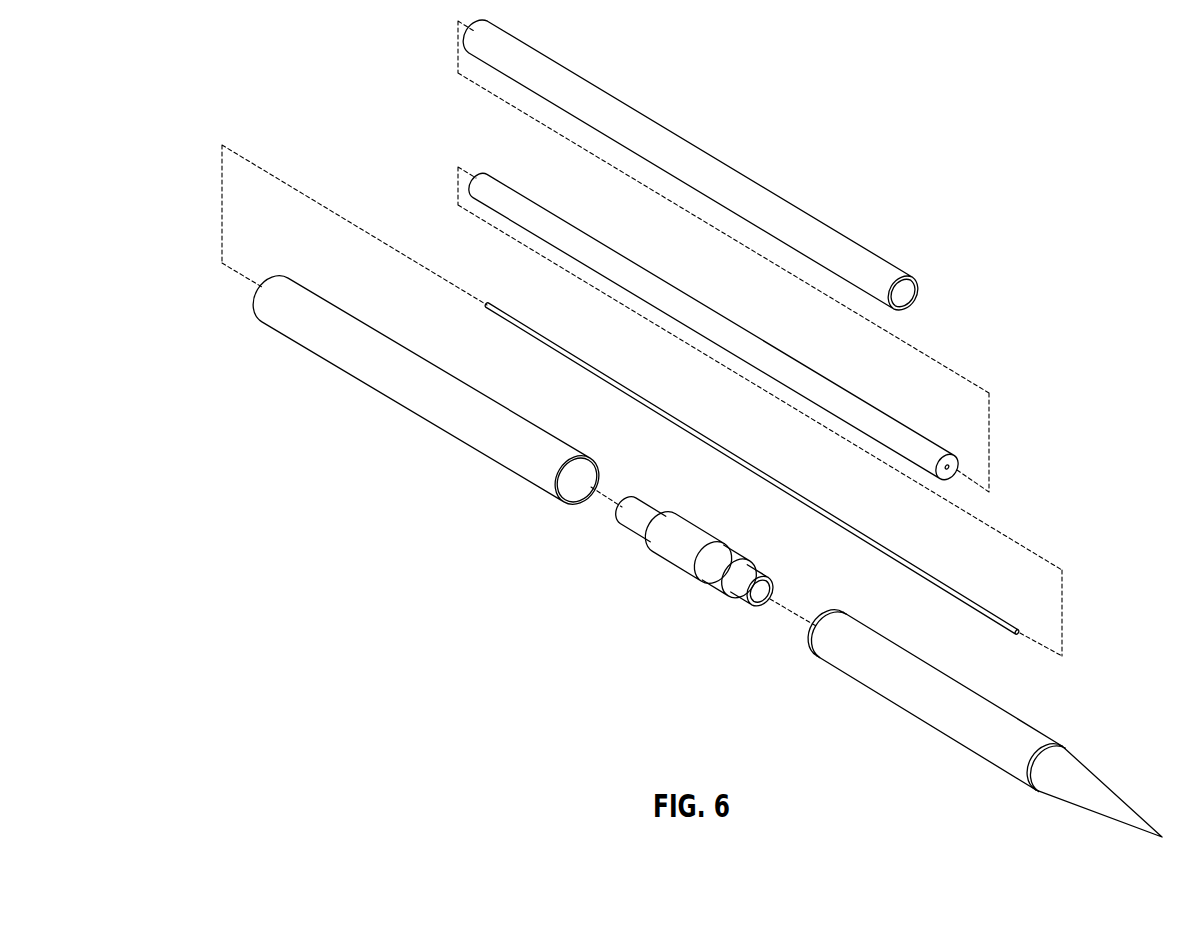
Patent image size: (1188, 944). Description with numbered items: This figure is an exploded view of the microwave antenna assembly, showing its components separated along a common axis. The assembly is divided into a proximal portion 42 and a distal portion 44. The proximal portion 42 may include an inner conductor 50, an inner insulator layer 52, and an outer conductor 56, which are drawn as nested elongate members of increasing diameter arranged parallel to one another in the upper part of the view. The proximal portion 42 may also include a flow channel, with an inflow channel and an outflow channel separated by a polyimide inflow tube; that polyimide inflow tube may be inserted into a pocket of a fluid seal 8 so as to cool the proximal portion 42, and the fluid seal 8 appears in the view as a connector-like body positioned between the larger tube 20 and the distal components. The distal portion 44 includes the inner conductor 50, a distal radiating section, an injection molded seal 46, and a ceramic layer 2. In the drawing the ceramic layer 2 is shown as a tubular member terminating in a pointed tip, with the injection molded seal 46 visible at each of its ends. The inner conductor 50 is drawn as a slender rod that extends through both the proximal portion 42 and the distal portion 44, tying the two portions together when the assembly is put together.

The ceramic layer 2 is at (912, 703).
The fluid seal 8 is at (680, 560).
The outer tube 20 is at (505, 397).
The proximal portion 42 is at (696, 548).
The distal portion 44 is at (957, 723).
The injection molded seal 46 is at (812, 650).
The inner conductor 50 is at (716, 433).
The inner insulator layer 52 is at (766, 331).
The outer conductor 56 is at (828, 214).